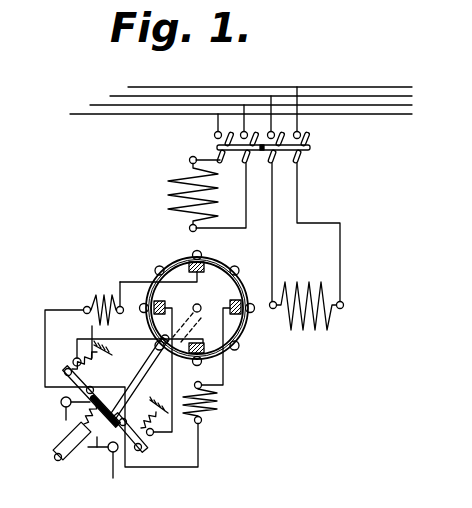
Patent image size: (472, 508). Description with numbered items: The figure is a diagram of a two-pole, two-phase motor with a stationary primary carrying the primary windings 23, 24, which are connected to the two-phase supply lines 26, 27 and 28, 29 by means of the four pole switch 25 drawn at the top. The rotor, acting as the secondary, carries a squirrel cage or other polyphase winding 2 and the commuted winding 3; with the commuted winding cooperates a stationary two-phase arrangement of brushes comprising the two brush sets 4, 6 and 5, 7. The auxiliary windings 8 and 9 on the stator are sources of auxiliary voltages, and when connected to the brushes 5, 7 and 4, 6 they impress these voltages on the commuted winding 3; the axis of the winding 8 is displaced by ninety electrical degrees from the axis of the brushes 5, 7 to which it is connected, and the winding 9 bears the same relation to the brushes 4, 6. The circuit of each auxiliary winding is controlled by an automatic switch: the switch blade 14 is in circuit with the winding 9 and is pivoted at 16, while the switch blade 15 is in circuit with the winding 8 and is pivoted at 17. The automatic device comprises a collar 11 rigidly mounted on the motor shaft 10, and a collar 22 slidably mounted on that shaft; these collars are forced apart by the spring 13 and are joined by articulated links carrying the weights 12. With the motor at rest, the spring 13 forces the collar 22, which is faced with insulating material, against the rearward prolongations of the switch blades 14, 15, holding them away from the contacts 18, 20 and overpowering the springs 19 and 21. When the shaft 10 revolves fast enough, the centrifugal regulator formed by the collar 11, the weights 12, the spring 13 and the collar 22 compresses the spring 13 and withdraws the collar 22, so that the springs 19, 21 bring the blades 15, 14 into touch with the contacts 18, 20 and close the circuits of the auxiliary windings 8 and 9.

The squirrel cage winding 2 is at (224, 263).
The commuted winding 3 is at (245, 334).
The brush 4 is at (166, 273).
The brush 5 is at (164, 360).
The brush 6 is at (144, 342).
The brush 7 is at (221, 335).
The auxiliary winding 8 is at (206, 403).
The auxiliary winding 9 is at (121, 372).
The motor shaft 10 is at (58, 461).
The collar 11 is at (66, 438).
The weights 12 is at (61, 401).
The spring 13 is at (97, 445).
The switch blade 14 is at (64, 370).
The switch blade 15 is at (143, 453).
The pivot 16 is at (94, 388).
The pivot 17 is at (125, 414).
The contact 18 is at (152, 436).
The spring 19 is at (167, 414).
The contact 20 is at (75, 359).
The spring 21 is at (92, 326).
The slidable collar 22 is at (84, 412).
The primary winding 23 is at (197, 194).
The primary winding 24 is at (307, 246).
The four pole switch 25 is at (273, 125).
The supply line 26 is at (262, 85).
The supply line 27 is at (252, 94).
The supply line 28 is at (242, 103).
The supply line 29 is at (232, 113).